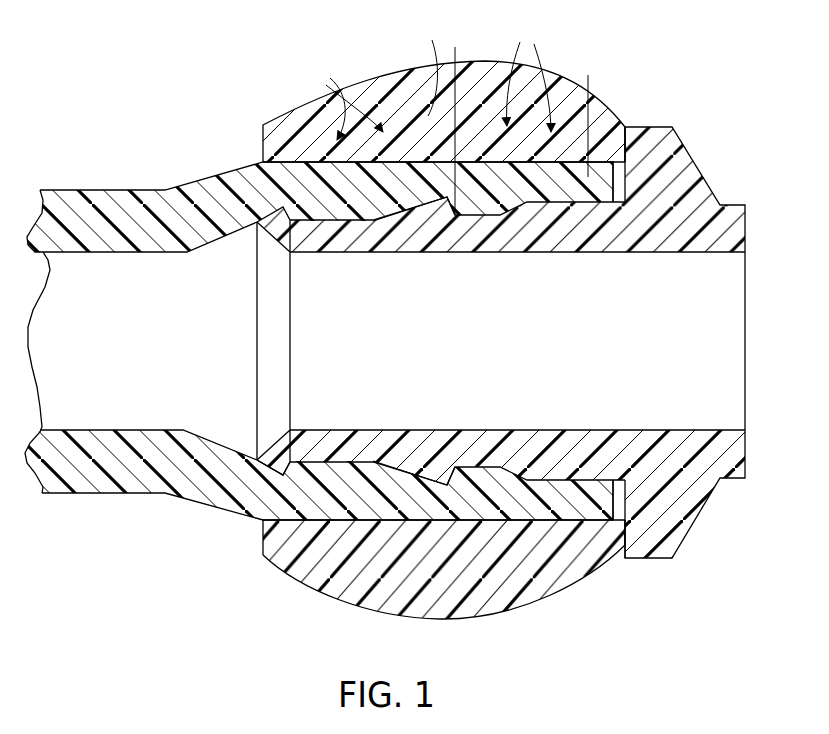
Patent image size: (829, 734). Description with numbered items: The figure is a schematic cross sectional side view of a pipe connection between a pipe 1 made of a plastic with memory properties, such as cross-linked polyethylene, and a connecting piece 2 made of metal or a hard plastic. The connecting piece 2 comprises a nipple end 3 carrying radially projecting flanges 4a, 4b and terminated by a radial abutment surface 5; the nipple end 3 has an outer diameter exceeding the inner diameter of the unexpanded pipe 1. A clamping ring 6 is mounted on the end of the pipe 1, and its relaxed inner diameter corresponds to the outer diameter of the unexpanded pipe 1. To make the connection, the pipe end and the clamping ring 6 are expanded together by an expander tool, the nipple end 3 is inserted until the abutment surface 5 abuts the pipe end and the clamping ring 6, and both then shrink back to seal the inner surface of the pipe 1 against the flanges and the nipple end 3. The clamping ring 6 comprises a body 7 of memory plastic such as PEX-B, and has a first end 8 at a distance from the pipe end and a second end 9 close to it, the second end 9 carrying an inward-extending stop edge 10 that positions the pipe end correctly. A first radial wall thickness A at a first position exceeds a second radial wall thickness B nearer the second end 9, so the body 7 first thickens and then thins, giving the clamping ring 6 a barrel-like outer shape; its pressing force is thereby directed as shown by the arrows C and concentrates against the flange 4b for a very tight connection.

The pipe 1 is at (165, 205).
The connecting piece 2 is at (712, 150).
The nipple end 3 is at (388, 237).
The radially projecting flange 4a is at (260, 518).
The radially projecting flange 4b is at (442, 485).
The radial abutment surface 5 is at (617, 541).
The clamping ring 6 is at (558, 32).
The body 7 is at (422, 120).
The first end 8 is at (262, 150).
The second end 9 is at (648, 138).
The stop edge 10 is at (616, 200).
The first radial wall thickness A is at (469, 112).
The second radial wall thickness B is at (609, 120).
The arrows C is at (428, 78).